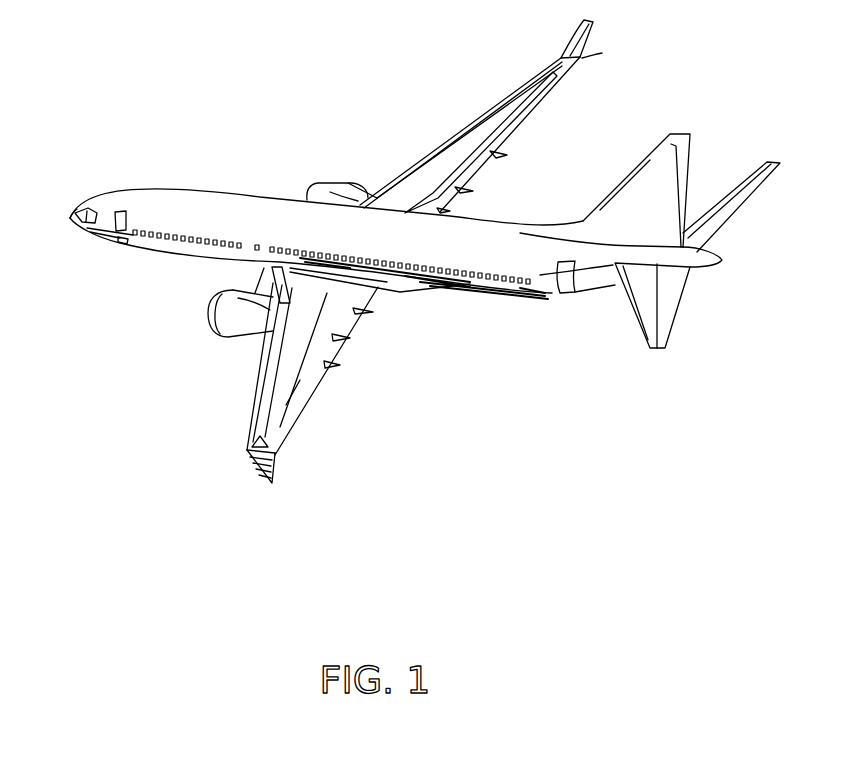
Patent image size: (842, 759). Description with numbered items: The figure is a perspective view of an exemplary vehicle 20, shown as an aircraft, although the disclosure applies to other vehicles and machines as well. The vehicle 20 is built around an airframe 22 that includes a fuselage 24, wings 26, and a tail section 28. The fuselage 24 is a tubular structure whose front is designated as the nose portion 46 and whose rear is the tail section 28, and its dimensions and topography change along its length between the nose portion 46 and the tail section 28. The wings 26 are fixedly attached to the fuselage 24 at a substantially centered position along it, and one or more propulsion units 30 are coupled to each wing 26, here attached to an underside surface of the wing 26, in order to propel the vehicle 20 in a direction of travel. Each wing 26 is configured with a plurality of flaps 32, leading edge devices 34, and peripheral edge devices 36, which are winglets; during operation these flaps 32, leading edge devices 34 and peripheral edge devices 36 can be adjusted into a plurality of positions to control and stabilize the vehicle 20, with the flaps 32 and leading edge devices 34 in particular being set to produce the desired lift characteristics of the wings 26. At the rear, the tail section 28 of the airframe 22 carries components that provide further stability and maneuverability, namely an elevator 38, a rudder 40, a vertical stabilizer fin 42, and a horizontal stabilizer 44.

The vehicle 20 is at (178, 97).
The airframe 22 is at (197, 395).
The fuselage 24 is at (195, 215).
The wings 26 is at (452, 164).
The tail section 28 is at (708, 65).
The propulsion units 30 is at (347, 192).
The flaps 32 is at (505, 122).
The leading edge devices 34 is at (508, 101).
The peripheral edge devices 36 is at (581, 40).
The elevator 38 is at (715, 227).
The rudder 40 is at (678, 188).
The vertical stabilizer fin 42 is at (660, 160).
The horizontal stabilizer 44 is at (648, 317).
The nose portion 46 is at (72, 212).